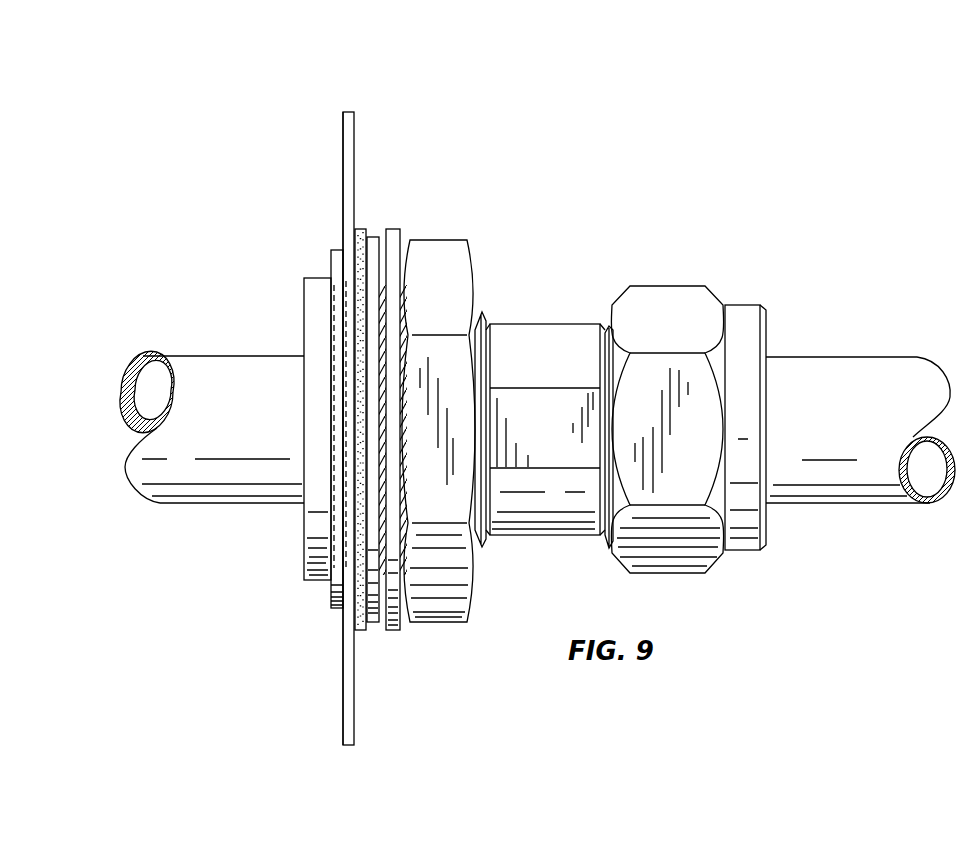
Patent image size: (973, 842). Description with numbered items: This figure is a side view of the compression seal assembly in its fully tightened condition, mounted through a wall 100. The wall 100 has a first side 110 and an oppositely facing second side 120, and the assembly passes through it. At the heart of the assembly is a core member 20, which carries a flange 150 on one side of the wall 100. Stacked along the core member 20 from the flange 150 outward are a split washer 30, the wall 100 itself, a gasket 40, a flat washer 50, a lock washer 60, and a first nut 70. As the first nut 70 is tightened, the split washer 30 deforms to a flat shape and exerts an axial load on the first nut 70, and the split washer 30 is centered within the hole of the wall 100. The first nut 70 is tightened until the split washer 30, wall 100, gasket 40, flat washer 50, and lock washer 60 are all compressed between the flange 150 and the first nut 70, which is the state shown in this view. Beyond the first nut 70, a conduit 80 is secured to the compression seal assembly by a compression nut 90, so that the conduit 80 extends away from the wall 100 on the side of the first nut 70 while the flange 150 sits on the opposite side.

The wall 100 is at (305, 106).
The core member 20 is at (535, 310).
The split washer 30 is at (328, 597).
The gasket 40 is at (360, 630).
The flat washer 50 is at (373, 622).
The lock washer 60 is at (390, 230).
The first nut 70 is at (443, 253).
The conduit 80 is at (843, 367).
The compression nut 90 is at (663, 298).
The first side 110 is at (343, 192).
The second side 120 is at (355, 157).
The flange 150 is at (317, 527).